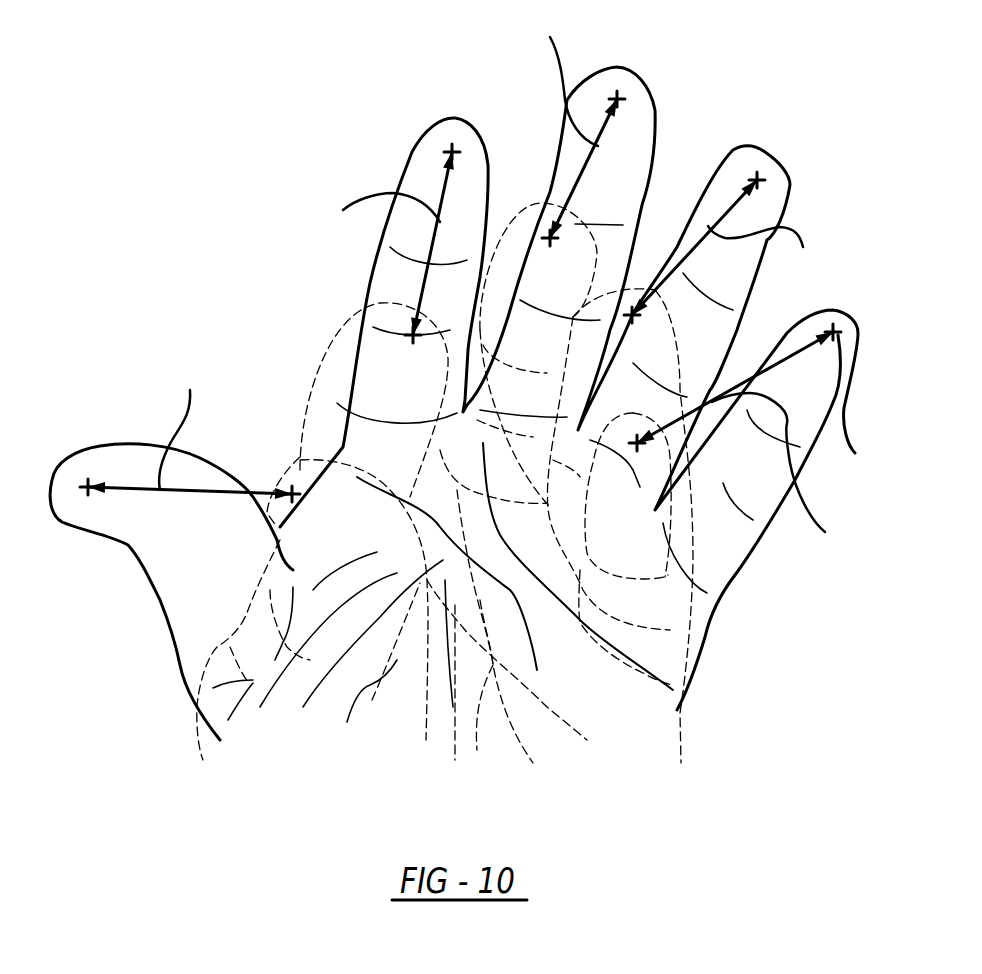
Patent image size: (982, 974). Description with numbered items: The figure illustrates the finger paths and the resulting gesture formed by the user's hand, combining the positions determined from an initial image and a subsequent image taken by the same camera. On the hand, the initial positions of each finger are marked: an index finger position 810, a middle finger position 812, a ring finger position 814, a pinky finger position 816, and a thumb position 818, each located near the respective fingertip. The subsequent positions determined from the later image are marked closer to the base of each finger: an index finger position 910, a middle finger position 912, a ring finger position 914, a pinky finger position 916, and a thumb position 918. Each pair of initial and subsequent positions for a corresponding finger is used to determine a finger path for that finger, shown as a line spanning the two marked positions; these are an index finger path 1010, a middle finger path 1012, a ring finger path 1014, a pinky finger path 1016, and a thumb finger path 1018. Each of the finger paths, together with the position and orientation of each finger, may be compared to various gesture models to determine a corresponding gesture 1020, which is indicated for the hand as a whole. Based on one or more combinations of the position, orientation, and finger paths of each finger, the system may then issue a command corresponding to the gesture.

The index finger position 810 is at (452, 150).
The middle finger position 812 is at (617, 99).
The ring finger position 814 is at (757, 180).
The pinky finger position 816 is at (852, 407).
The thumb position 818 is at (88, 487).
The index finger position 910 is at (413, 335).
The middle finger position 912 is at (550, 238).
The ring finger position 914 is at (632, 315).
The pinky finger position 916 is at (640, 445).
The thumb position 918 is at (292, 494).
The index finger path 1010 is at (369, 211).
The middle finger path 1012 is at (552, 81).
The ring finger path 1014 is at (774, 249).
The pinky finger path 1016 is at (787, 470).
The thumb finger path 1018 is at (181, 424).
The gesture 1020 is at (190, 180).